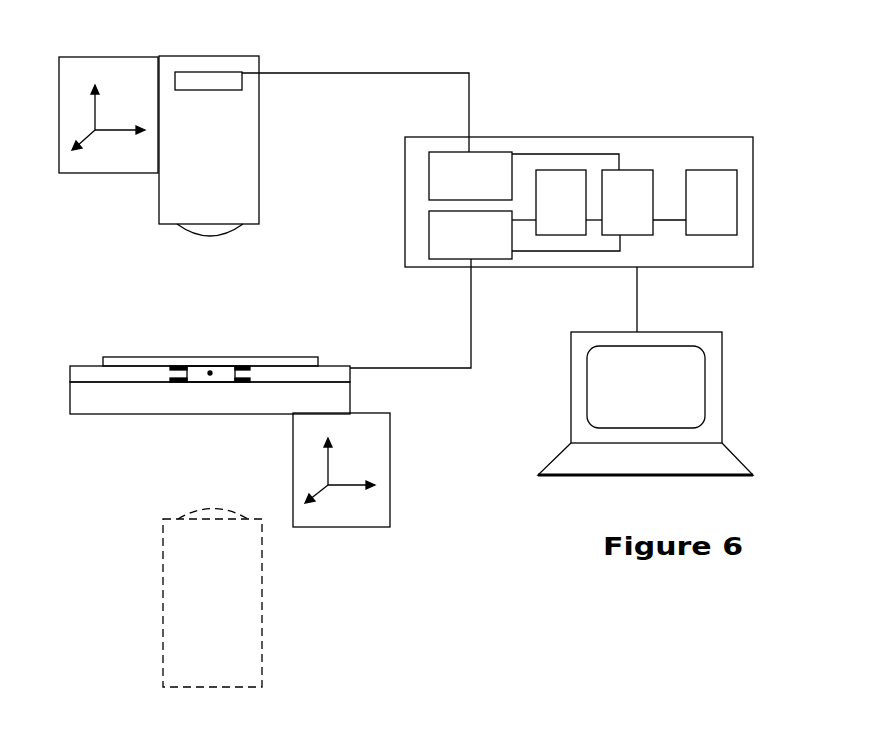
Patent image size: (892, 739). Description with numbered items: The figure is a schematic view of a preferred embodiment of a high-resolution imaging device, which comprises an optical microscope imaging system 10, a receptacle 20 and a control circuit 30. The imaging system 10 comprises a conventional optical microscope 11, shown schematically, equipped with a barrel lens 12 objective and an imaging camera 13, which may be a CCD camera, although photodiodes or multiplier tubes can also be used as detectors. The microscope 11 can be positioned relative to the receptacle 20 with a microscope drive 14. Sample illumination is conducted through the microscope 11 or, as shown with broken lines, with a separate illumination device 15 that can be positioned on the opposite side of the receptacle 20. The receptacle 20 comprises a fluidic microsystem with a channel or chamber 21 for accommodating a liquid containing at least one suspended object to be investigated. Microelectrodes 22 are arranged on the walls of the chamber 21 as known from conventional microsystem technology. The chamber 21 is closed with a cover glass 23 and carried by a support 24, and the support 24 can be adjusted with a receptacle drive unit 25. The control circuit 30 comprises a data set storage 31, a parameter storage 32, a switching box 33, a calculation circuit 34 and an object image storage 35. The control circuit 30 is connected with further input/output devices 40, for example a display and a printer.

The optical microscope imaging system 10 is at (94, 250).
The optical microscope 11 is at (223, 202).
The barrel lens 12 is at (227, 236).
The imaging camera 13 is at (223, 72).
The microscope drive 14 is at (123, 86).
The illumination device 15 is at (226, 682).
The receptacle 20 is at (28, 397).
The chamber 21 is at (210, 346).
The microelectrodes 22 is at (178, 383).
The cover glass 23 is at (210, 354).
The support 24 is at (97, 397).
The receptacle drive unit 25 is at (356, 444).
The control circuit 30 is at (724, 160).
The data set storage 31 is at (524, 176).
The parameter storage 32 is at (524, 235).
The switching box 33 is at (569, 202).
The calculation circuit 34 is at (644, 202).
The object image storage 35 is at (711, 202).
The input/output devices 40 is at (736, 361).